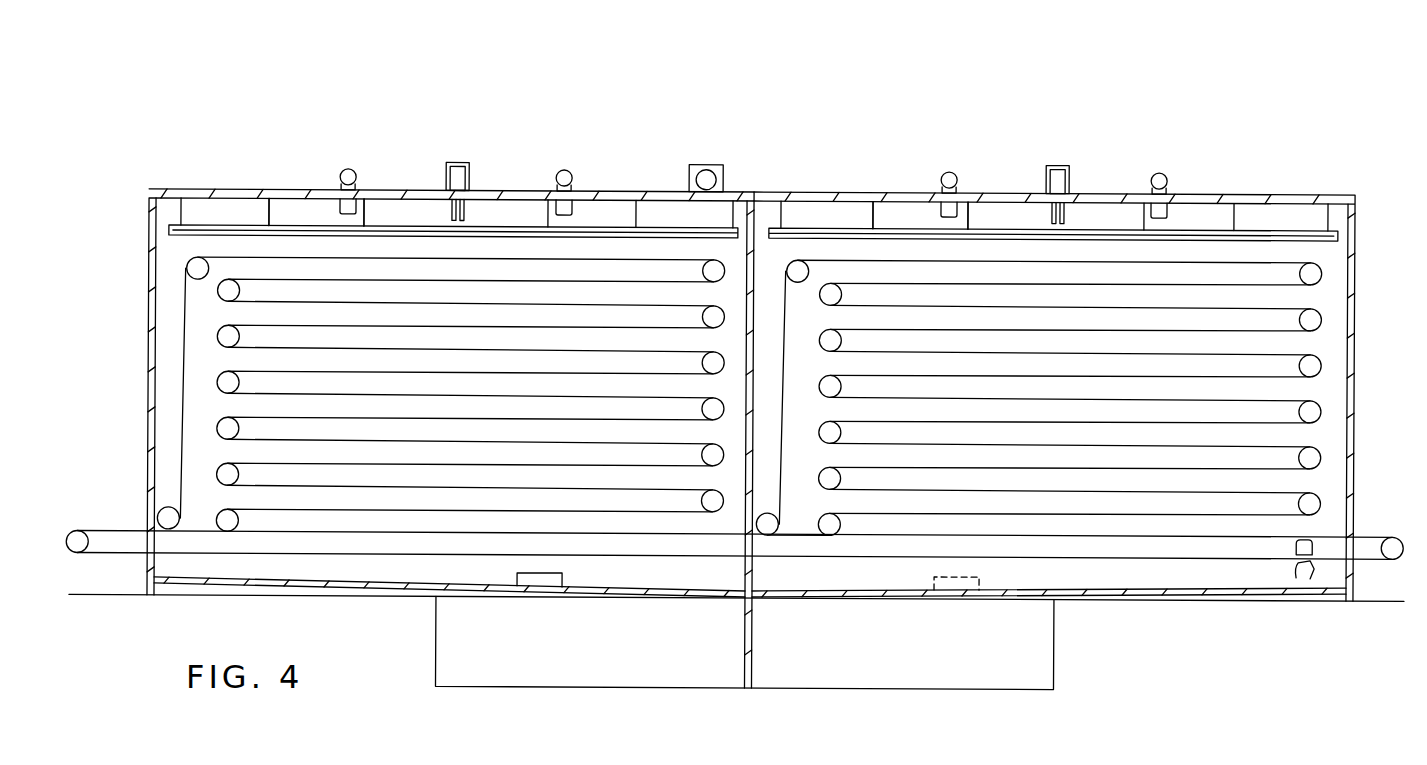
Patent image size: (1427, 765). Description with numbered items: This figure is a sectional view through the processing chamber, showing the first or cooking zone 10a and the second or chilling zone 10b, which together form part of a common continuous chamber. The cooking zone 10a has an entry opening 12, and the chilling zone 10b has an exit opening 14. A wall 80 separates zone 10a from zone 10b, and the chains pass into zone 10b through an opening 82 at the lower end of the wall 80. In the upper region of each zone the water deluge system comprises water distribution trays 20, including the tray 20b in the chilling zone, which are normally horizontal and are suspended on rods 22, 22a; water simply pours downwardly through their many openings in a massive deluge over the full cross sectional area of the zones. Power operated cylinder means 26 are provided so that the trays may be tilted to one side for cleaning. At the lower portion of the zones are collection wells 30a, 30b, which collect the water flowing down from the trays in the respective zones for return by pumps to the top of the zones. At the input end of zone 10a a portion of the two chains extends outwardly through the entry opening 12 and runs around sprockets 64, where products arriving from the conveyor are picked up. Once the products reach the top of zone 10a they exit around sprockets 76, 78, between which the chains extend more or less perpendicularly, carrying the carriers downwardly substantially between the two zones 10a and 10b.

The first zone 10a is at (1110, 168).
The second zone 10b is at (416, 158).
The entry opening 12 is at (1360, 514).
The exit opening 14 is at (131, 504).
The water distribution trays 20 is at (845, 227).
The water distribution tray 20b is at (598, 227).
The rods 22 is at (363, 214).
The rod 22a is at (967, 221).
The power operated cylinder means 26 is at (452, 164).
The collection well 30a is at (1143, 598).
The collection well 30b is at (371, 598).
The sprockets 64 is at (1394, 553).
The sprocket 76 is at (789, 268).
The sprocket 78 is at (772, 530).
The wall 80 is at (754, 400).
The opening 82 is at (740, 551).